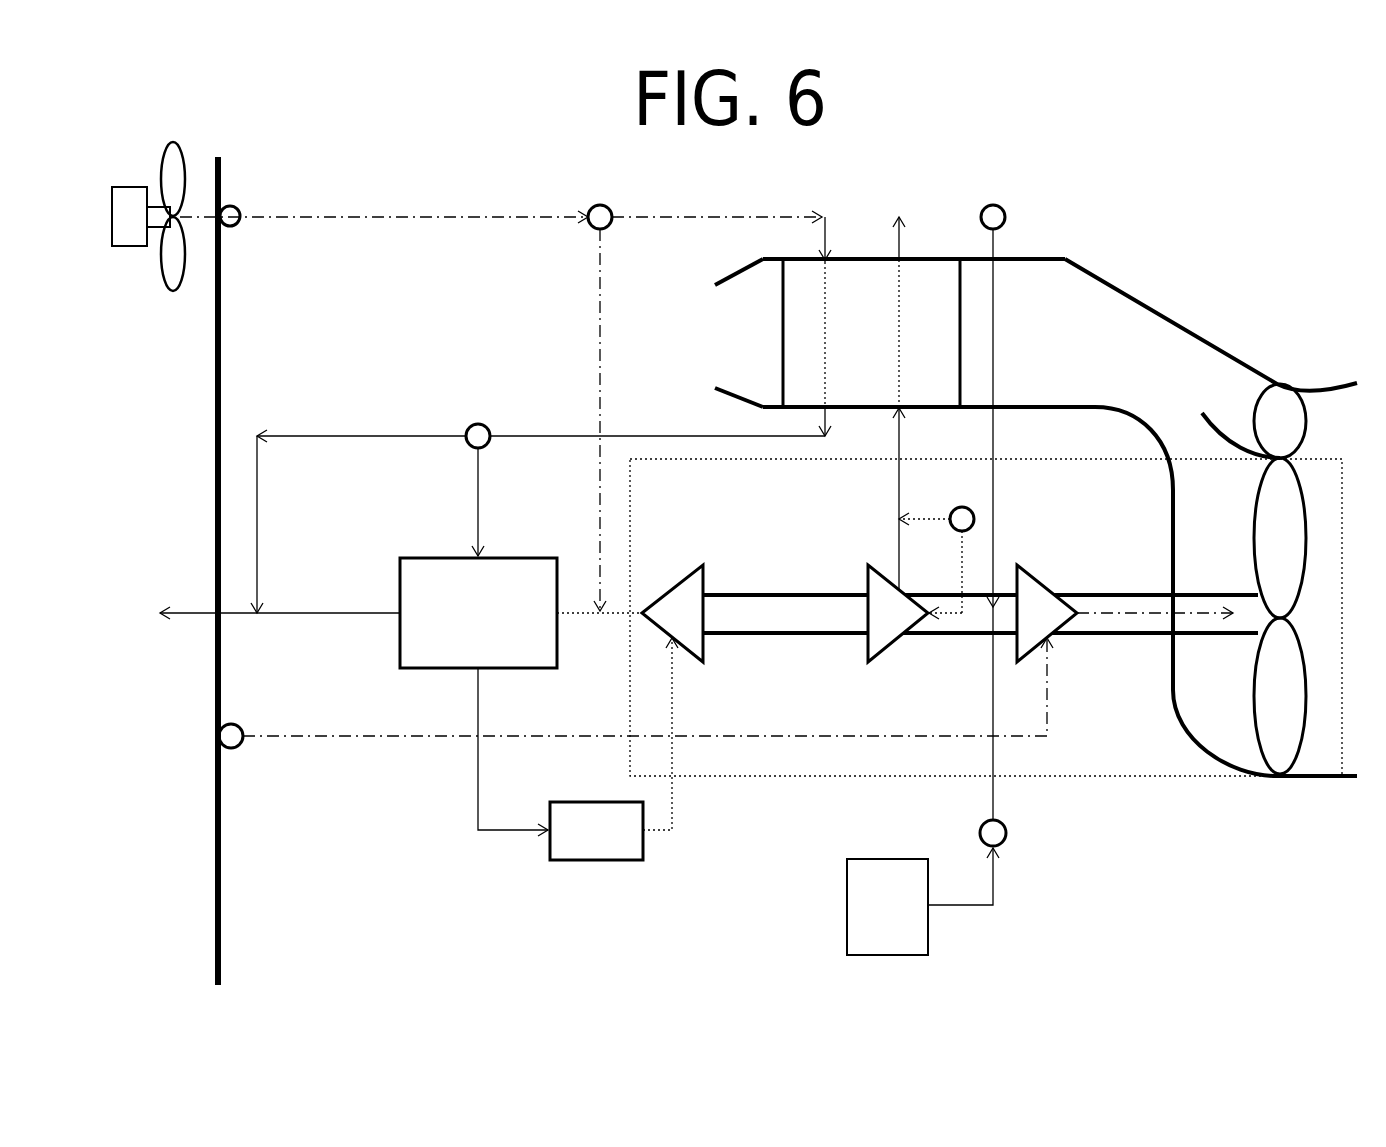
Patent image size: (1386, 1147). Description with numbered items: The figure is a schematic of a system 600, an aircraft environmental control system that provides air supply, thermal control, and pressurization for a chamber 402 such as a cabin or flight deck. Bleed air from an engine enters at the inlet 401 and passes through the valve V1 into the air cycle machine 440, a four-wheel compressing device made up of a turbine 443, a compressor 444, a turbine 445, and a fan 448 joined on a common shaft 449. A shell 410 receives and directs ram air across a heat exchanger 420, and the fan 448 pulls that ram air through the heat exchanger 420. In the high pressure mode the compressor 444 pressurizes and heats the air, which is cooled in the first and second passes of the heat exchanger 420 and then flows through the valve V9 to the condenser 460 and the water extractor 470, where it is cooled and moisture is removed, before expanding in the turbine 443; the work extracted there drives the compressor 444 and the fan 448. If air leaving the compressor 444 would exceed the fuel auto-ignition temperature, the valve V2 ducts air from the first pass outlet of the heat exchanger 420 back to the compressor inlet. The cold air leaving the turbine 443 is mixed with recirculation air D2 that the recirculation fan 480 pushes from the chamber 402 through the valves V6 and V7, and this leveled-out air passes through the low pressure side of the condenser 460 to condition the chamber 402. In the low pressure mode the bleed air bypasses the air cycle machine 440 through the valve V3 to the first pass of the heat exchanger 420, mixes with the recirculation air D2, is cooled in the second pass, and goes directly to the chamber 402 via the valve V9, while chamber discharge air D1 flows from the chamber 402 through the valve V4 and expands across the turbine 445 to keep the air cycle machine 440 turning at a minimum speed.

The system 600 is at (1228, 188).
The chamber 402 is at (215, 158).
The recirculation fan 480 is at (149, 294).
The shell 410 is at (1127, 297).
The heat exchanger 420 is at (852, 348).
The air cycle machine 440 is at (1161, 777).
The turbine 443 is at (662, 625).
The compressor 444 is at (874, 625).
The turbine 445 is at (1024, 625).
The fan 448 is at (1225, 681).
The shaft 449 is at (1114, 636).
The condenser 460 is at (459, 625).
The water extractor 470 is at (577, 843).
The inlet 401 is at (868, 941).
The valve V1 is at (1005, 840).
The valve V2 is at (1005, 210).
The valve V3 is at (957, 507).
The valve V4 is at (243, 745).
The valve V6 is at (240, 224).
The valve V7 is at (612, 228).
The valve V9 is at (490, 428).
The chamber discharge air D1 is at (363, 733).
The recirculation air D2 is at (425, 213).